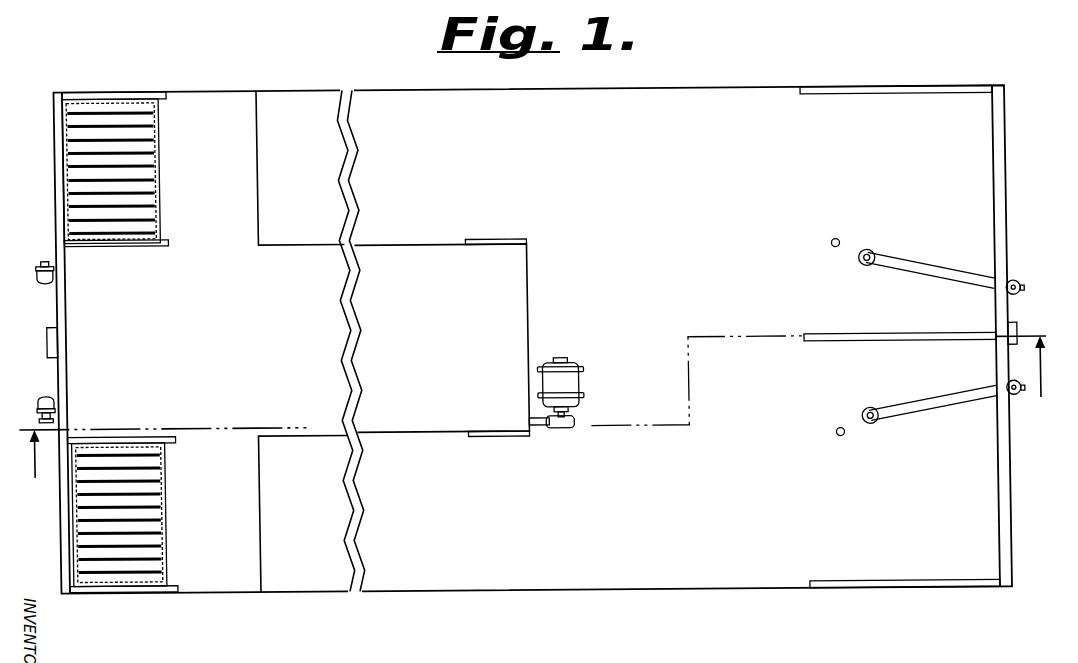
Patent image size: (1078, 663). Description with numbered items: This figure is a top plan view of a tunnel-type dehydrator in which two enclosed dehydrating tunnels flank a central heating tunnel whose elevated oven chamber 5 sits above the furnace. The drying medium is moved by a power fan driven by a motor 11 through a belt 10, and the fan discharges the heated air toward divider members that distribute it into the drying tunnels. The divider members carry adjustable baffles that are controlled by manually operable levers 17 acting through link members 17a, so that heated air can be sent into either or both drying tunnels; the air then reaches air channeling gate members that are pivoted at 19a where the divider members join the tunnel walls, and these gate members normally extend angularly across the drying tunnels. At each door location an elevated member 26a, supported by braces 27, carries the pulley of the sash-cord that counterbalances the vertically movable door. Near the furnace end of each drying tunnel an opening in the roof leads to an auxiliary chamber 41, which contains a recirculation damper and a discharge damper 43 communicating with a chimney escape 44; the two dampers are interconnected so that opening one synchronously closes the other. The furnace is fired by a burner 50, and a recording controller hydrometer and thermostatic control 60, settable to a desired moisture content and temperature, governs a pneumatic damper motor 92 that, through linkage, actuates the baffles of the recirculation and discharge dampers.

The oven chamber 5 is at (433, 356).
The belt 10 is at (541, 424).
The motor 11 is at (572, 365).
The manually operable lever 17 is at (1023, 291).
The link member 17a is at (953, 272).
The pivot 19a is at (835, 241).
The elevated member 26a is at (63, 305).
The brace 27 is at (154, 77).
The auxiliary chamber 41 is at (245, 214).
The discharge damper 43 is at (163, 168).
The chimney escape 44 is at (161, 195).
The burner 50 is at (47, 339).
The recording controller hydrometer and thermostatic control 60 is at (1018, 331).
The pneumatic damper motor 92 is at (37, 274).